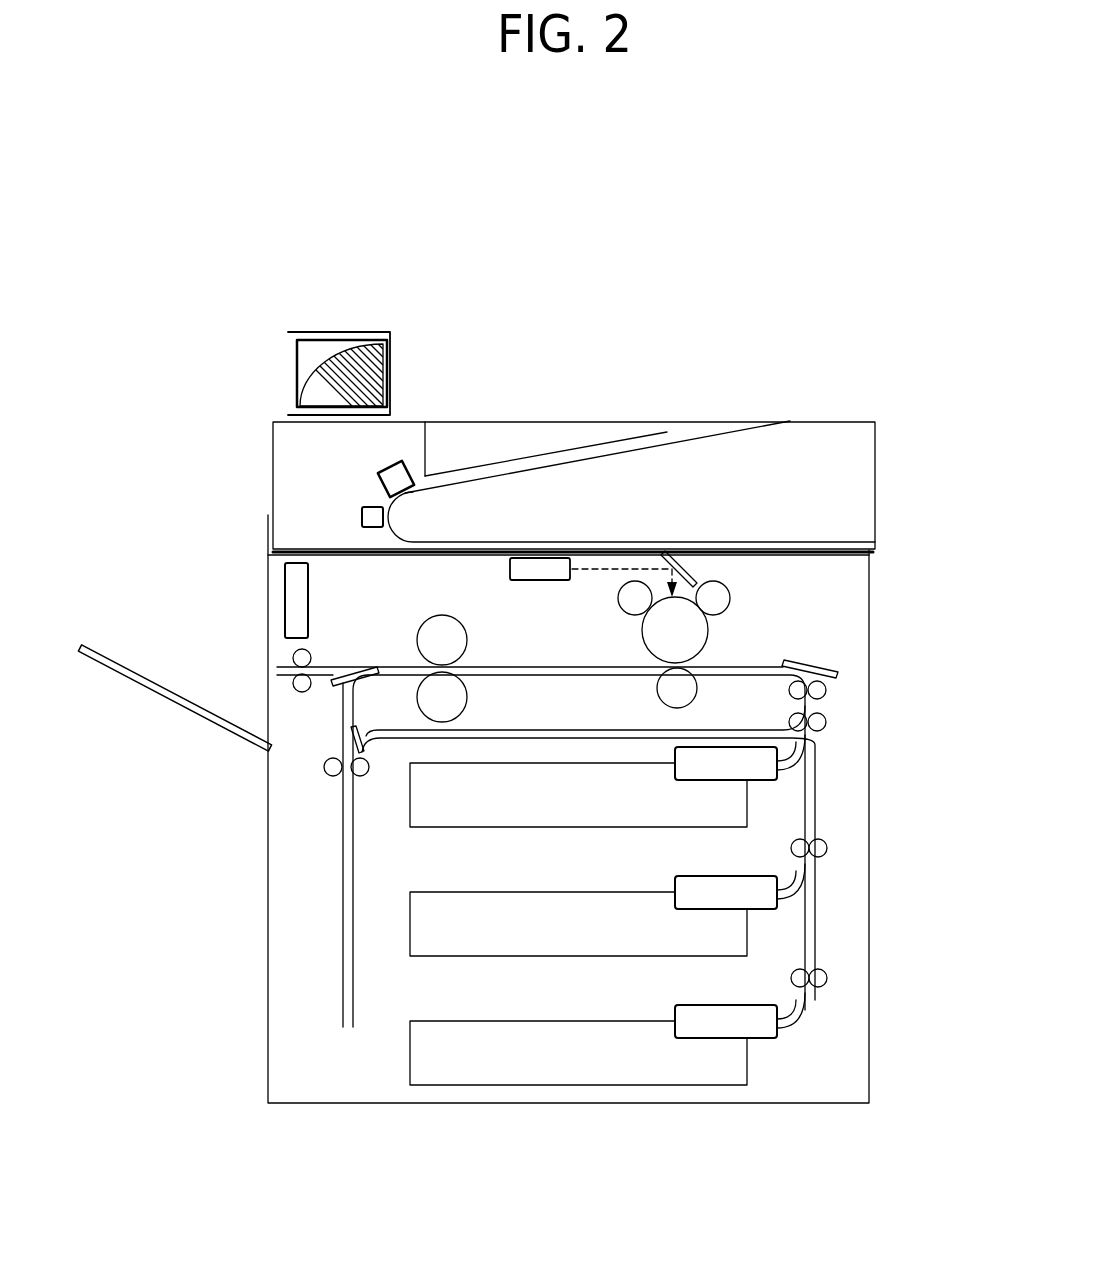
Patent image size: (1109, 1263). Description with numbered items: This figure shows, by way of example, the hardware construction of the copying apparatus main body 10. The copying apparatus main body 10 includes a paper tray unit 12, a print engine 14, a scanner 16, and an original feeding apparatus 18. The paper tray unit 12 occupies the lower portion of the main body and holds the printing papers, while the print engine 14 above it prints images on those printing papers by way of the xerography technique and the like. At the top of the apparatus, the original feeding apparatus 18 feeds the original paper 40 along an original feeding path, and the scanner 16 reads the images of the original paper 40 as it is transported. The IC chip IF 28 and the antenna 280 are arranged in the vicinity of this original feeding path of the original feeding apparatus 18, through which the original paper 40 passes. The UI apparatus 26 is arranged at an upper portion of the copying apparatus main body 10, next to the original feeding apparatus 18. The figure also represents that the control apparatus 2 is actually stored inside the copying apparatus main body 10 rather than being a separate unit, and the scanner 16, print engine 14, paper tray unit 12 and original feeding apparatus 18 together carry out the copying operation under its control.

The copying apparatus main body 10 is at (691, 219).
The original feeding apparatus 18 is at (700, 373).
The original paper 40 is at (564, 446).
The antenna 280 is at (396, 464).
The IC chip IF 28 is at (396, 479).
The scanner 16 is at (360, 515).
The UI apparatus 26 is at (290, 371).
The control apparatus 2 is at (285, 573).
The print engine 14 is at (770, 606).
The paper tray unit 12 is at (845, 845).